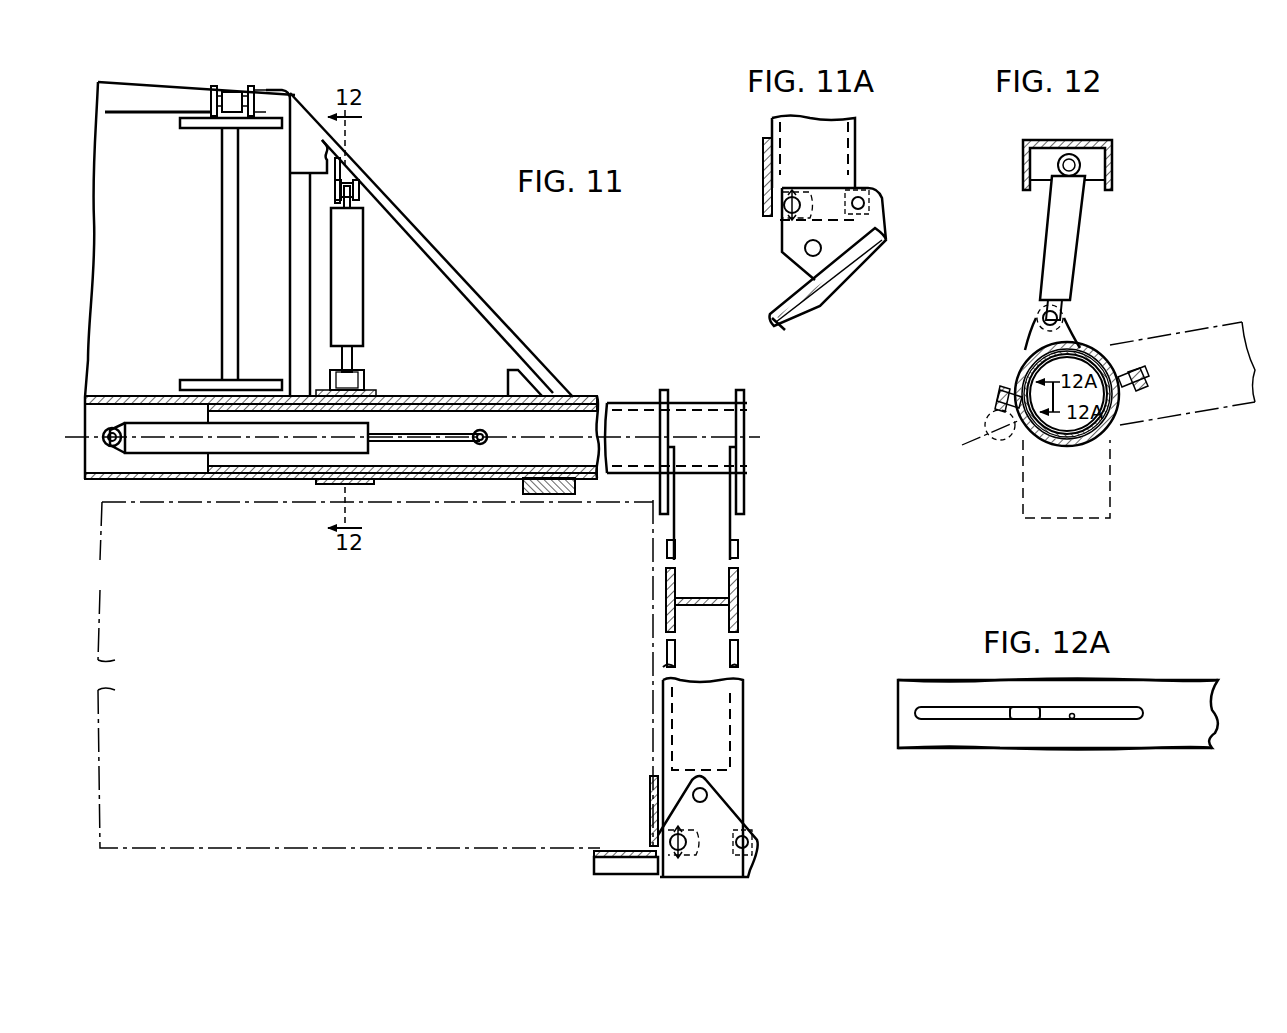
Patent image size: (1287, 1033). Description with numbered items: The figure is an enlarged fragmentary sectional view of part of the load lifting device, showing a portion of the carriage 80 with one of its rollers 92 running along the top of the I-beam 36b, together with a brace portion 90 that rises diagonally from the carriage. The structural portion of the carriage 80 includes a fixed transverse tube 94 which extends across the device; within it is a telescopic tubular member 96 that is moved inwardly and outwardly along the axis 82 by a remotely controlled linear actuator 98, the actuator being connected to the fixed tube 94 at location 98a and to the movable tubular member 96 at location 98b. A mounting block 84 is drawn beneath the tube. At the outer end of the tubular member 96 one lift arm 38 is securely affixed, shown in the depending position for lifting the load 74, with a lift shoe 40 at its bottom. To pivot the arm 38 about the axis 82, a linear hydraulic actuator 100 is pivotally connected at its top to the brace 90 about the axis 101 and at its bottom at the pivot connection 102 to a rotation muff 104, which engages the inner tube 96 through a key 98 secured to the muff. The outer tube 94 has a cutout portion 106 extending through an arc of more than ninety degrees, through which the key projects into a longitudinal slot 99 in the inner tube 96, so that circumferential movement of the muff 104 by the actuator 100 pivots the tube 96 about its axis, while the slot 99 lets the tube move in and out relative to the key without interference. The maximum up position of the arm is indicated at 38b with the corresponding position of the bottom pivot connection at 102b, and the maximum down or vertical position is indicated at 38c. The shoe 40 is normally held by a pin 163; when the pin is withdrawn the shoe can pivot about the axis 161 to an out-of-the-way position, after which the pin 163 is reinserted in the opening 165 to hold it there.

In FIG. 11, the I-beam 36b is at (222, 186).
In FIG. 11, the arm 38 is at (735, 600).
In FIG. 11A, the arm 38 is at (809, 166).
In FIG. 12, the maximum up position of the arm 38b is at (1180, 330).
In FIG. 12, the maximum down position of the arm 38c is at (1105, 478).
In FIG. 11, the lift shoe 40 is at (715, 862).
In FIG. 11A, the lift shoe 40 is at (805, 303).
In FIG. 11, the load 74 is at (125, 727).
In FIG. 11, the carriage 80 is at (428, 238).
In FIG. 11, the axis 82 is at (758, 438).
In FIG. 11, the mounting block 84 is at (548, 495).
In FIG. 11, the brace portion 90 is at (115, 96).
In FIG. 12, the brace portion 90 is at (1112, 163).
In FIG. 11, the roller 92 is at (231, 92).
In FIG. 11, the fixed transverse tube 94 is at (243, 481).
In FIG. 12, the fixed transverse tube 94 is at (1115, 432).
In FIG. 11, the telescopic tubular member 96 is at (594, 478).
In FIG. 12, the telescopic tubular member 96 is at (1032, 356).
In FIG. 12A, the telescopic tubular member 96 is at (1145, 733).
In FIG. 11, the linear actuator 98 is at (165, 397).
In FIG. 12, the linear actuator 98 is at (997, 400).
In FIG. 12A, the linear actuator 98 is at (1025, 719).
In FIG. 11, the connection location 98a is at (103, 445).
In FIG. 11, the connection location 98b is at (478, 446).
In FIG. 12A, the longitudinal slot 99 is at (1073, 719).
In FIG. 11, the linear hydraulic actuator 100 is at (348, 298).
In FIG. 12, the linear hydraulic actuator 100 is at (1055, 222).
In FIG. 11, the pivot axis 101 is at (360, 192).
In FIG. 12, the pivot axis 101 is at (1082, 172).
In FIG. 12, the pivot connection 102 is at (1040, 315).
In FIG. 12, the pivot connection position 102b is at (984, 441).
In FIG. 11, the rotation muff 104 is at (375, 392).
In FIG. 12, the rotation muff 104 is at (1097, 346).
In FIG. 11, the cutout portion 106 is at (525, 405).
In FIG. 12, the cutout portion 106 is at (1058, 446).
In FIG. 11, the pivot axis 161 is at (748, 838).
In FIG. 11A, the pivot axis 161 is at (866, 198).
In FIG. 11, the pin 163 is at (672, 838).
In FIG. 11A, the pin 163 is at (797, 200).
In FIG. 11, the opening 165 is at (707, 797).
In FIG. 11A, the opening 165 is at (782, 216).